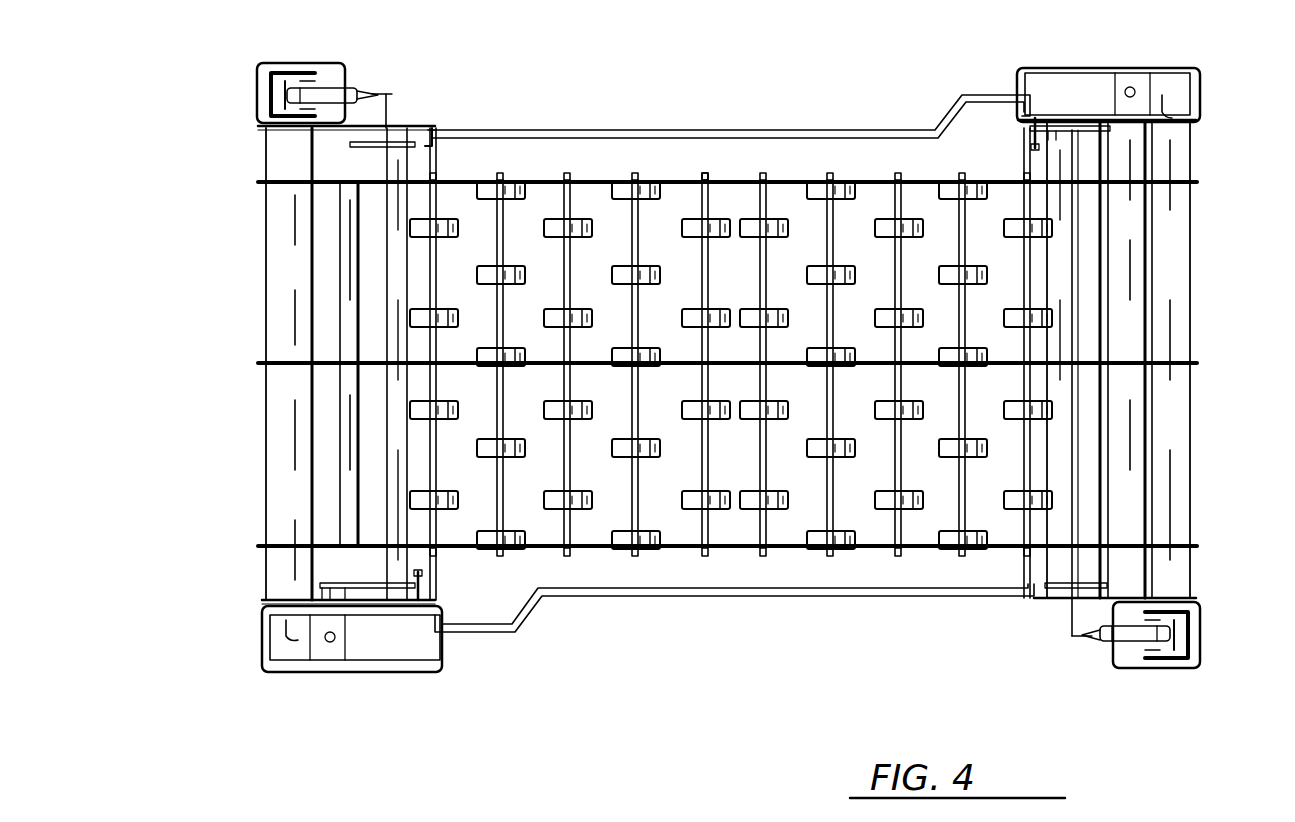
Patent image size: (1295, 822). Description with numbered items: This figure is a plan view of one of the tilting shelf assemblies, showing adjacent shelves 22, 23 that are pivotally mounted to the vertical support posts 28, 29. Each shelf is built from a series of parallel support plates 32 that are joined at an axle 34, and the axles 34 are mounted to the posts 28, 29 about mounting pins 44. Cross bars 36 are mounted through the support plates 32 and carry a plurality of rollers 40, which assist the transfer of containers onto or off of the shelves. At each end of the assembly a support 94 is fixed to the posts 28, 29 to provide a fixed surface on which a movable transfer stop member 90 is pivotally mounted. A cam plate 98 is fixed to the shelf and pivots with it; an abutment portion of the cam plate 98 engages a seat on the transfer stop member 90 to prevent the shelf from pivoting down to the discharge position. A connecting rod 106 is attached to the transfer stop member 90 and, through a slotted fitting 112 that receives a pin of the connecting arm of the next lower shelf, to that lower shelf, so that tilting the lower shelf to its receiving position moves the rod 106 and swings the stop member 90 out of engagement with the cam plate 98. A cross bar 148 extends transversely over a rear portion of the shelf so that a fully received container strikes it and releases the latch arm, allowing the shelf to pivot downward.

The shelf 22 is at (535, 178).
The shelf 23 is at (805, 180).
The post 28 is at (262, 98).
The post 29 is at (1205, 80).
The support plates 32 is at (598, 182).
The axle 34 is at (265, 270).
The cross bars 36 is at (572, 262).
The rollers 40 is at (494, 268).
The mounting pins 44 is at (1164, 98).
The transfer stop member 90 is at (1032, 140).
The support 94 is at (1040, 72).
The cam plate 98 is at (1085, 126).
The connecting rod 106 is at (726, 132).
The slotted fitting 112 is at (427, 125).
The cross bar 148 is at (388, 447).